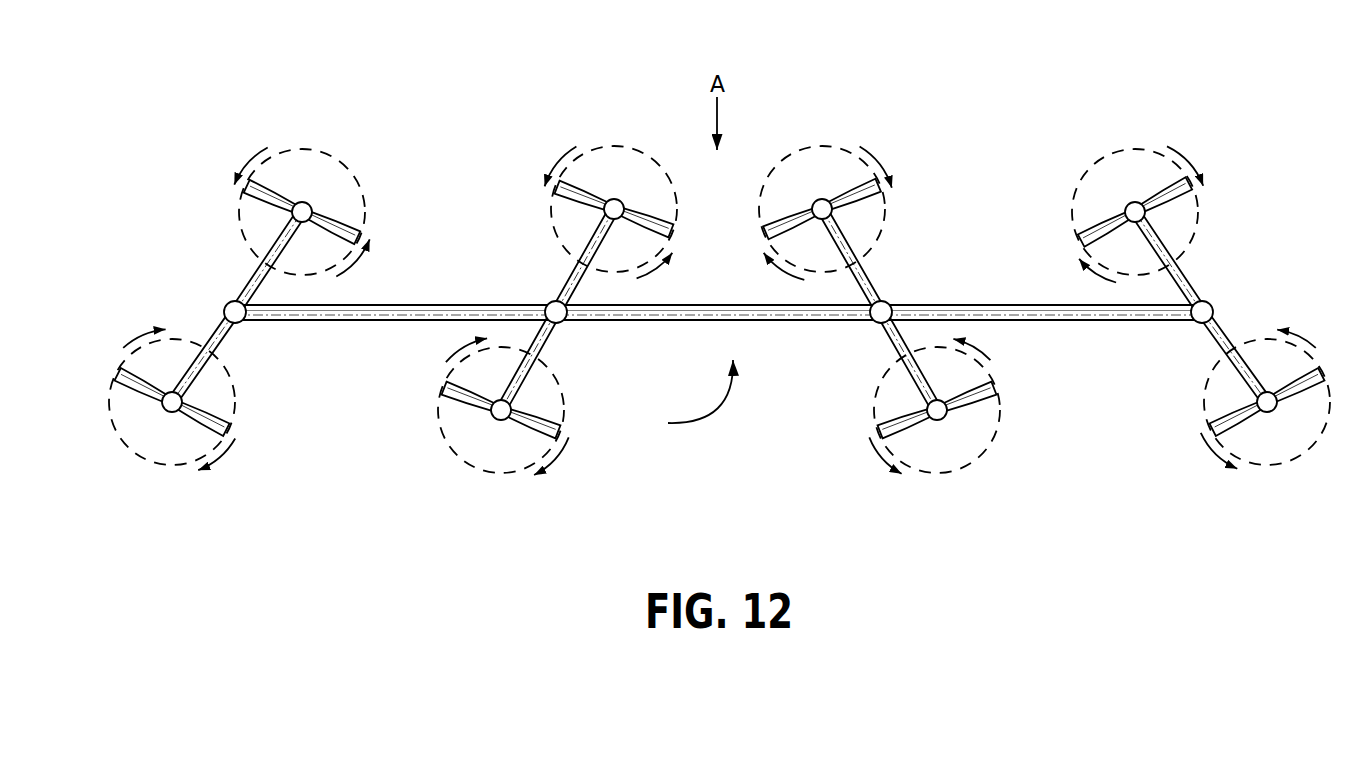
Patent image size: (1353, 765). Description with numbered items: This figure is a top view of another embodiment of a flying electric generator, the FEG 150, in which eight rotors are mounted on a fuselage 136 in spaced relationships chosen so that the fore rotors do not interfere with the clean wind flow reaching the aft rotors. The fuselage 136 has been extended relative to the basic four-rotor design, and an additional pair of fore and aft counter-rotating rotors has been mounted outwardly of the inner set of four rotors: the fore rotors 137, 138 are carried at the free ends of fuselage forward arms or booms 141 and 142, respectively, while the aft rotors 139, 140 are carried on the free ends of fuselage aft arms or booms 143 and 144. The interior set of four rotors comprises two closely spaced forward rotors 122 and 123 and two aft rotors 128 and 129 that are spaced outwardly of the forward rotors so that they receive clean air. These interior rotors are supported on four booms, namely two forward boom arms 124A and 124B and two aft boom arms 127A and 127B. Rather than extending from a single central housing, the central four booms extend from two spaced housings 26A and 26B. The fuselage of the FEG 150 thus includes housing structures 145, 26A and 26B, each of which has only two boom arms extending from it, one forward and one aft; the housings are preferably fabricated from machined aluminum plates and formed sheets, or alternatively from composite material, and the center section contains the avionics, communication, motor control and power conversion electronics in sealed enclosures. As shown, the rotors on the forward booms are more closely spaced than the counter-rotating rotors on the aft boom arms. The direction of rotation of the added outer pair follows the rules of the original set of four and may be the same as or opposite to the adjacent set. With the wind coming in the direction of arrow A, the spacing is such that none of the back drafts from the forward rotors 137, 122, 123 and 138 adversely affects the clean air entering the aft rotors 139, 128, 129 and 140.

The housing 26A is at (548, 304).
The housing 26B is at (876, 325).
The forward rotor 122 is at (623, 202).
The forward rotor 123 is at (819, 199).
The forward boom arm 124A is at (576, 287).
The forward boom arm 124B is at (864, 292).
The aft boom arm 127A is at (553, 335).
The aft boom arm 127B is at (903, 337).
The aft rotor 128 is at (491, 412).
The aft rotor 129 is at (947, 413).
The fuselage 136 is at (390, 305).
The rotor 137 is at (308, 204).
The rotor 138 is at (1129, 206).
The rotor 139 is at (171, 412).
The rotor 140 is at (1253, 397).
The fuselage forward arm 141 is at (250, 272).
The fuselage forward arm 142 is at (1160, 238).
The fuselage aft arm 143 is at (209, 329).
The fuselage aft arm 144 is at (1230, 363).
The housing structure 145 is at (1213, 304).
The FEG 150 is at (681, 400).